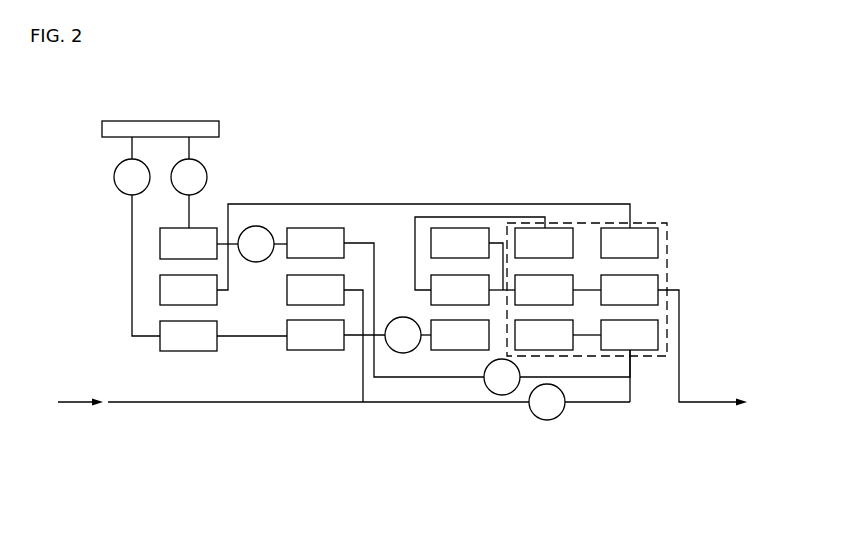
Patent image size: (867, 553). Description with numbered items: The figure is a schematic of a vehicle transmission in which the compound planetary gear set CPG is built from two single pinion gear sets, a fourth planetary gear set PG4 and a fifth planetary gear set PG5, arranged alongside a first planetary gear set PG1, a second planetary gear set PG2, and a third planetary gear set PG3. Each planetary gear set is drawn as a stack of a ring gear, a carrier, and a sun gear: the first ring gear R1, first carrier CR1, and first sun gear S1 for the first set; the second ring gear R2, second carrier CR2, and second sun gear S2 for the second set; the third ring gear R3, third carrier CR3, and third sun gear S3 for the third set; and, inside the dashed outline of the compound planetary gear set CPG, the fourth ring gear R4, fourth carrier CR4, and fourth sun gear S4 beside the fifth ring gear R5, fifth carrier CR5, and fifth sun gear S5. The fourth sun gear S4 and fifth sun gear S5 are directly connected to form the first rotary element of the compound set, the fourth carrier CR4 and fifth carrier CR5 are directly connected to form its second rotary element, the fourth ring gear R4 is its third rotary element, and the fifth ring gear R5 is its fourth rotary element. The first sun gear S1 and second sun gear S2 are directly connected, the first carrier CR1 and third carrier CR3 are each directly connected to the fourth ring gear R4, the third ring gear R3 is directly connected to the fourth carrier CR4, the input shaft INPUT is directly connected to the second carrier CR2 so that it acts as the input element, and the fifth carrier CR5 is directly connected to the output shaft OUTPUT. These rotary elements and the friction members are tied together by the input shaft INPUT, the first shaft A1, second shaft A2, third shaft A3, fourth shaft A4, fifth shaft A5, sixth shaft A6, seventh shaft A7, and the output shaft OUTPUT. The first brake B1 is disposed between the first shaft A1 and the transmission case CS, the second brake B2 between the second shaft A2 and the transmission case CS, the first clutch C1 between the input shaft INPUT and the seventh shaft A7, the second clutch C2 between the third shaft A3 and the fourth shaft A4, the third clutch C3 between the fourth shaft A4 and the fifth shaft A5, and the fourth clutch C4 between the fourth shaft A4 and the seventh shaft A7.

The transmission case CS is at (160, 121).
The first brake B1 is at (132, 166).
The second brake B2 is at (189, 166).
The first clutch C1 is at (547, 402).
The second clutch C2 is at (252, 244).
The third clutch C3 is at (387, 335).
The fourth clutch C4 is at (502, 377).
The first shaft A1 is at (131, 268).
The second shaft A2 is at (190, 200).
The third shaft A3 is at (312, 203).
The fourth shaft A4 is at (374, 250).
The fifth shaft A5 is at (427, 353).
The sixth shaft A6 is at (462, 228).
The seventh shaft A7 is at (610, 402).
The first ring gear R1 is at (188, 243).
The second ring gear R2 is at (315, 243).
The third ring gear R3 is at (460, 243).
The fourth ring gear R4 is at (544, 243).
The fifth ring gear R5 is at (629, 243).
The first carrier CR1 is at (188, 290).
The second carrier CR2 is at (315, 290).
The third carrier CR3 is at (460, 290).
The fourth carrier CR4 is at (544, 290).
The fifth carrier CR5 is at (629, 290).
The first sun gear S1 is at (188, 336).
The second sun gear S2 is at (315, 335).
The third sun gear S3 is at (460, 335).
The fourth sun gear S4 is at (544, 335).
The fifth sun gear S5 is at (629, 335).
The first planetary gear set PG1 is at (197, 364).
The second planetary gear set PG2 is at (313, 364).
The third planetary gear set PG3 is at (458, 364).
The fourth planetary gear set PG4 is at (564, 364).
The fifth planetary gear set PG5 is at (643, 364).
The compound planetary gear set CPG is at (602, 375).
The input shaft INPUT is at (122, 402).
The output shaft OUTPUT is at (679, 320).